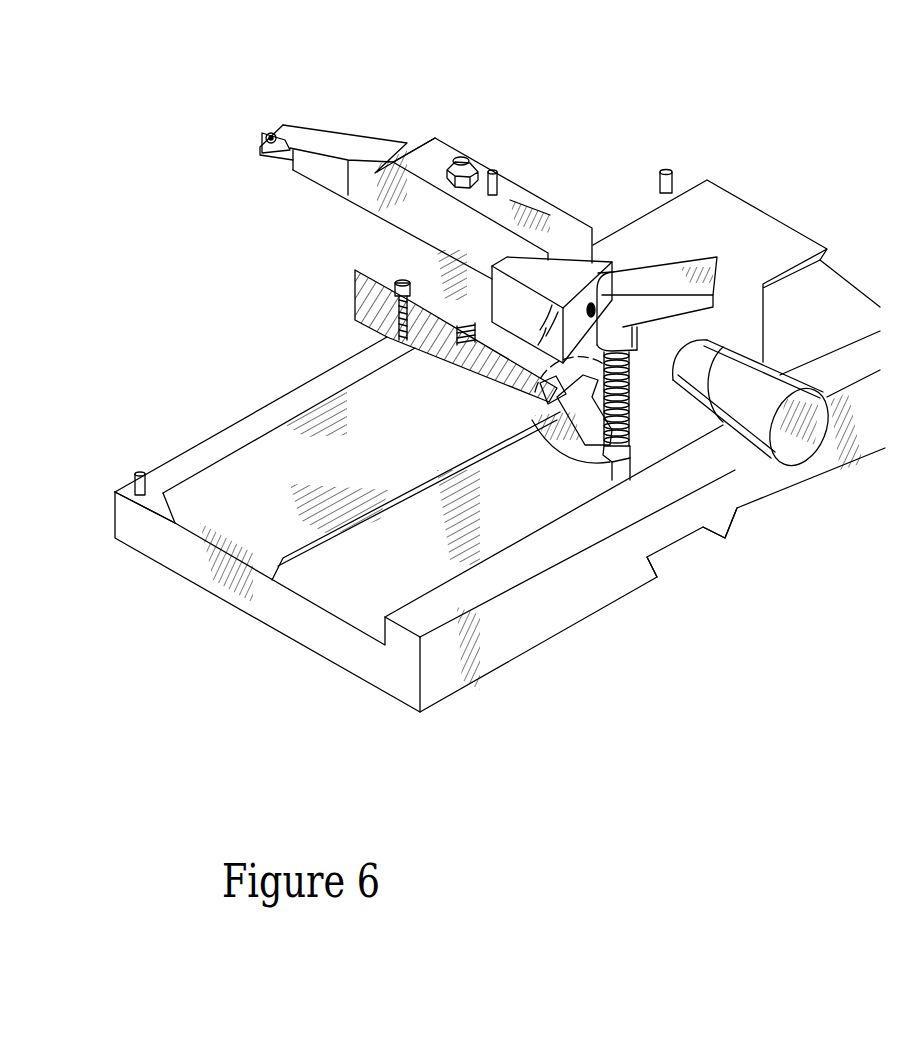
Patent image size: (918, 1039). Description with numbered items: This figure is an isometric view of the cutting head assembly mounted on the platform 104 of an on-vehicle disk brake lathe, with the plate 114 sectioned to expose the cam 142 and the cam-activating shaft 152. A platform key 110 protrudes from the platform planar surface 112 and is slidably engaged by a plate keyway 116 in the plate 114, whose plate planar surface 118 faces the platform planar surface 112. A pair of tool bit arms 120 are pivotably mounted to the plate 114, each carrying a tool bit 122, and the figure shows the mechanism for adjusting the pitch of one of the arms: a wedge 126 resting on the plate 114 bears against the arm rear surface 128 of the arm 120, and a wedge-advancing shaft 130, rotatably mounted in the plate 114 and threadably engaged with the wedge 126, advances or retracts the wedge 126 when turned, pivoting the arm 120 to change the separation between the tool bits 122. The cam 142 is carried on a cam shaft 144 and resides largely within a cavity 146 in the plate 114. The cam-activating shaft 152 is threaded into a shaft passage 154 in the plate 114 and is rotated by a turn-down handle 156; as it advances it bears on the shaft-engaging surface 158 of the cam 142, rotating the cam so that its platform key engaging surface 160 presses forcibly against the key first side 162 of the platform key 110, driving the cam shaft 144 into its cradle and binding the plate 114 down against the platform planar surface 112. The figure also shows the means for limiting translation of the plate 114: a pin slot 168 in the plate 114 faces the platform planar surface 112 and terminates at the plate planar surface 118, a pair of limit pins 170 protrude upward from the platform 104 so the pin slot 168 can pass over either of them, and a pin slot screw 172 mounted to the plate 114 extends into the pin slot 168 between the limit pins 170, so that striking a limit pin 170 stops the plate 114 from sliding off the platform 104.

The platform 104 is at (282, 632).
The platform key 110 is at (193, 522).
The platform planar surface 112 is at (238, 433).
The plate 114 is at (338, 287).
The plate keyway 116 is at (493, 368).
The plate planar surface 118 is at (355, 318).
The tool bit arms 120 is at (437, 135).
The tool bit 122 is at (265, 138).
The wedges 126 is at (518, 270).
The arm rear surface 128 is at (548, 252).
The wedge-advancing shafts 130 is at (597, 300).
The cam 142 is at (550, 470).
The cam shaft 144 is at (553, 394).
The cavity 146 is at (625, 466).
The cam-activating shaft 152 is at (630, 405).
The shaft passage 154 is at (640, 360).
The turn-down handle 156 is at (668, 288).
The shaft-engaging surface 158 is at (612, 455).
The platform key engaging surface 160 is at (556, 404).
The key first side 162 is at (402, 498).
The pin slot 168 is at (398, 340).
The limit pins 170 is at (668, 172).
The pin slot screw 172 is at (397, 288).